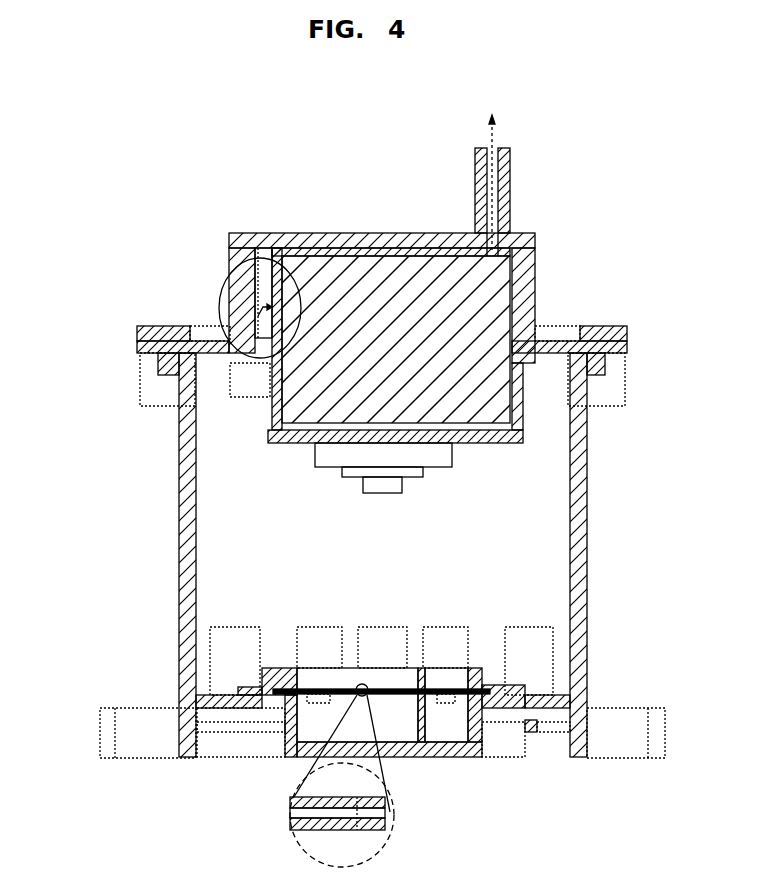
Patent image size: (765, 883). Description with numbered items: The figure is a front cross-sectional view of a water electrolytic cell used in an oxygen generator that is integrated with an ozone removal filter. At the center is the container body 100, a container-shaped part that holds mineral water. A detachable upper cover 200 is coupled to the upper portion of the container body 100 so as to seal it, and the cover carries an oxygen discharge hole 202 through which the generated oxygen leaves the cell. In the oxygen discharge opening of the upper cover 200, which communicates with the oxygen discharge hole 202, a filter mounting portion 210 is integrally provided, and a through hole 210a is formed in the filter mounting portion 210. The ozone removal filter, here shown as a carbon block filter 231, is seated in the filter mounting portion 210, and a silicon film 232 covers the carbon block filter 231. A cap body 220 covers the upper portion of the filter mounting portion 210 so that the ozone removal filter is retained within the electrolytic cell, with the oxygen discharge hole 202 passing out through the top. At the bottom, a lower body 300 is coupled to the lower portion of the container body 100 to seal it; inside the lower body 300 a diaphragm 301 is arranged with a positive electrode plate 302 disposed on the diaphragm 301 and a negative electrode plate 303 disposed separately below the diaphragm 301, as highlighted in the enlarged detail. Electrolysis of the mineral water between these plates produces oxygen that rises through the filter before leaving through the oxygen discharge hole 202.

The container body 100 is at (179, 490).
The detachable upper cover 200 is at (137, 328).
The oxygen discharge hole 202 is at (510, 172).
The filter mounting portion 210 is at (245, 262).
The through hole 210a is at (258, 330).
The cap body 220 is at (530, 268).
The carbon block filter 231 is at (335, 272).
The silicon film 232 is at (383, 254).
The lower body 300 is at (172, 727).
The diaphragm 301 is at (292, 813).
The positive electrode plate 302 is at (293, 798).
The negative electrode plate 303 is at (290, 828).